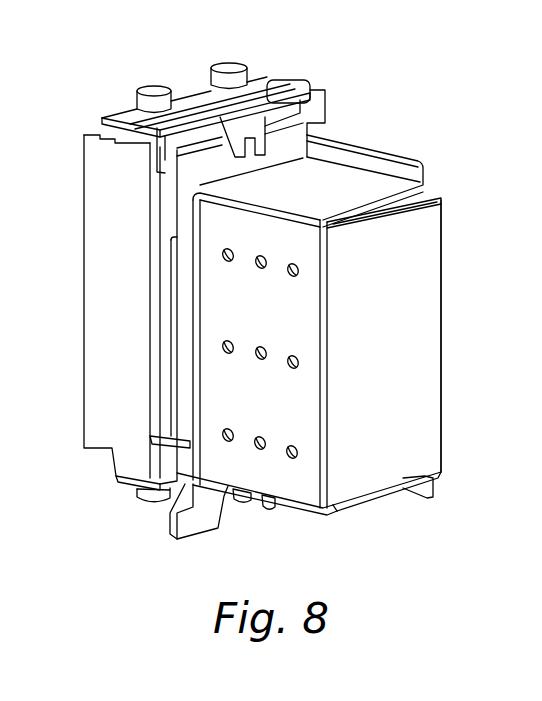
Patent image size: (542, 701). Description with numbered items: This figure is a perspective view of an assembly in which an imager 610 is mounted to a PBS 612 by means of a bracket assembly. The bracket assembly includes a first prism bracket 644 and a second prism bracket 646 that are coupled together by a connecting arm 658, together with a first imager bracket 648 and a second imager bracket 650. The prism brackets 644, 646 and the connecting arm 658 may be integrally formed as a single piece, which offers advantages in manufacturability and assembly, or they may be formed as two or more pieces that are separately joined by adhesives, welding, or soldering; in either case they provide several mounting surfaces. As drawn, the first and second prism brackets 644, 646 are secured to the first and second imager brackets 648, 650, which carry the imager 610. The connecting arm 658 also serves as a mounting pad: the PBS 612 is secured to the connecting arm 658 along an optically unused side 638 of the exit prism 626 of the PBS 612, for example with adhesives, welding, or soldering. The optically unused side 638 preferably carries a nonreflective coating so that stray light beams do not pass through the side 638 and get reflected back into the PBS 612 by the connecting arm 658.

The imager 610 is at (85, 199).
The PBS 612 is at (450, 255).
The exit prism 626 is at (428, 431).
The optically unused side 638 is at (332, 482).
The first prism bracket 644 is at (378, 150).
The second prism bracket 646 is at (418, 488).
The first imager bracket 648 is at (190, 98).
The second imager bracket 650 is at (142, 498).
The connecting arm 658 is at (287, 477).